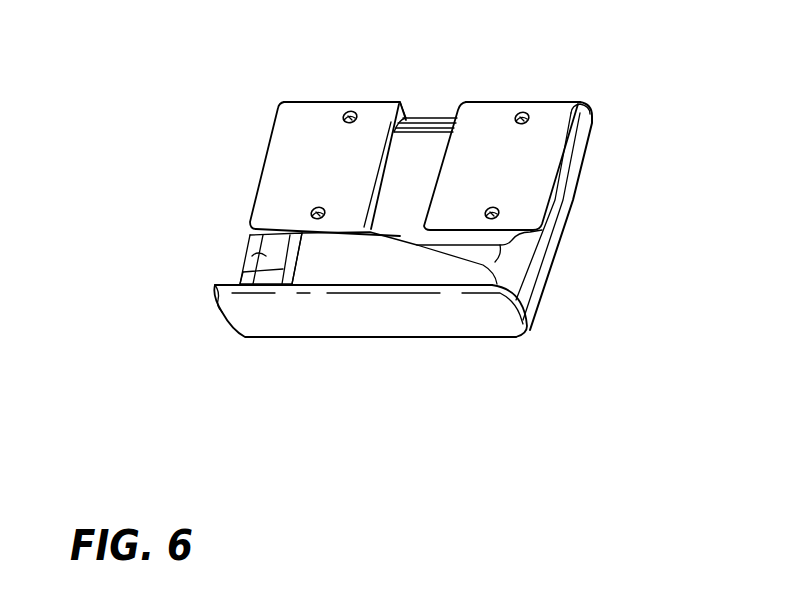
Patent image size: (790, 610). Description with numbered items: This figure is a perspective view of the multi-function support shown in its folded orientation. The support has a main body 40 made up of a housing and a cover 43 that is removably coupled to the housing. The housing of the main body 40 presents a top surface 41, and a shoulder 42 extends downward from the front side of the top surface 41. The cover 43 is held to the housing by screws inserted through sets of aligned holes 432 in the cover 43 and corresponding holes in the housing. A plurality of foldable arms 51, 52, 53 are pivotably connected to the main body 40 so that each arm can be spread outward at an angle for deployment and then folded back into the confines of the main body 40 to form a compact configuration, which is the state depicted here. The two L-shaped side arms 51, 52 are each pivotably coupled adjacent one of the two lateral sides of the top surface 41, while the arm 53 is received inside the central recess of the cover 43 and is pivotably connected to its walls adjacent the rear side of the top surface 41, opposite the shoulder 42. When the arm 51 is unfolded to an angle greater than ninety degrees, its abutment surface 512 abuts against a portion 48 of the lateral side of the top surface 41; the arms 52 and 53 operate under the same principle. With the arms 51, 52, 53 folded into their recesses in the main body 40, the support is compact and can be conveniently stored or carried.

The main body 40 is at (580, 190).
The top surface 41 is at (538, 300).
The shoulder 42 is at (392, 327).
The cover 43 is at (278, 152).
The aligned holes 432 is at (520, 108).
The portion of the lateral side of the top surface 48 is at (245, 252).
The L-shaped side arm 51 is at (330, 272).
The abutment surface 512 is at (245, 273).
The L-shaped side arm 52 is at (490, 258).
The arm 53 is at (413, 155).